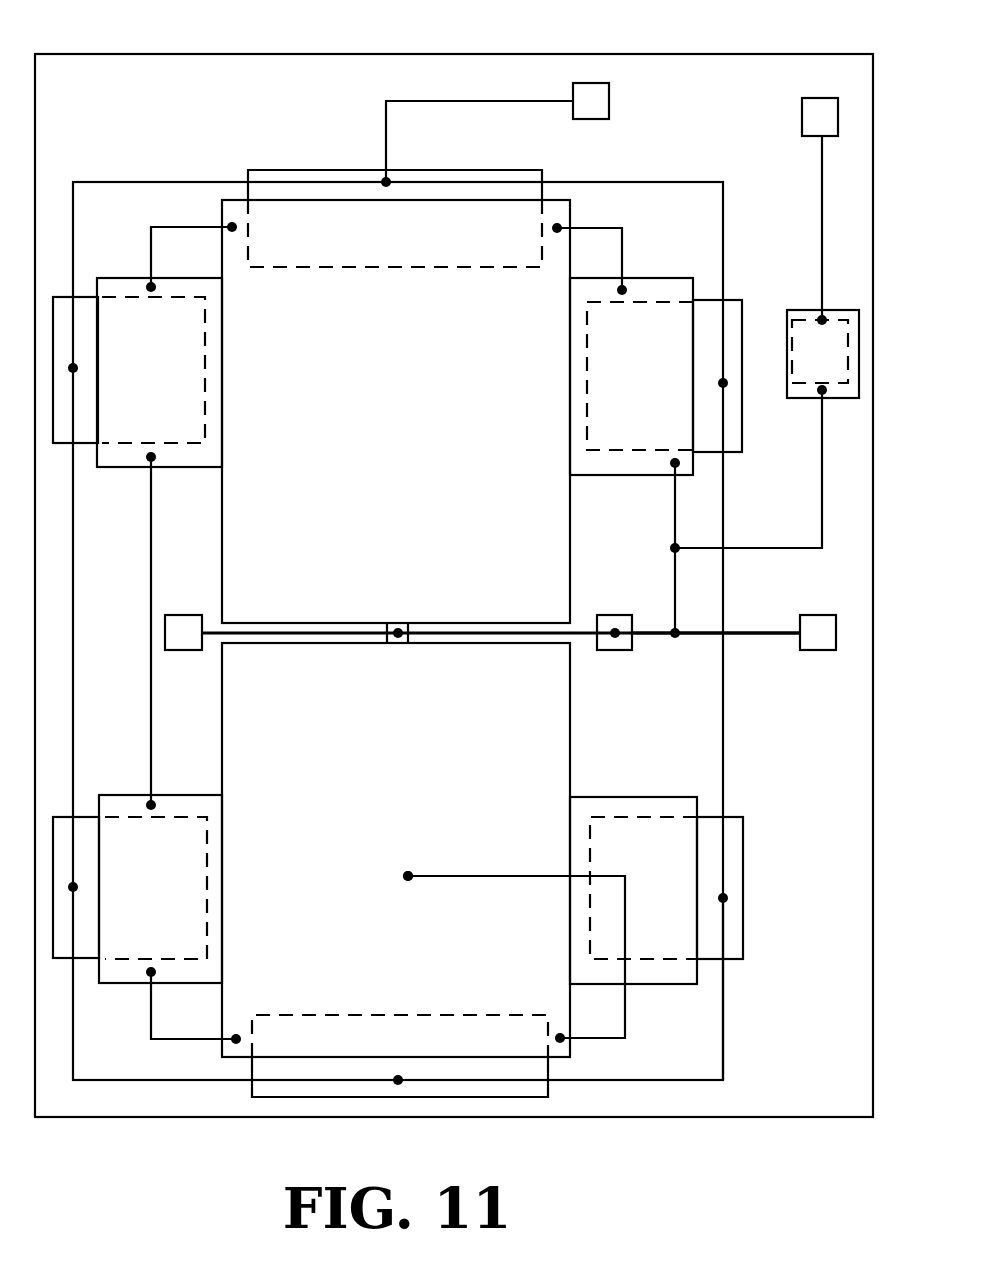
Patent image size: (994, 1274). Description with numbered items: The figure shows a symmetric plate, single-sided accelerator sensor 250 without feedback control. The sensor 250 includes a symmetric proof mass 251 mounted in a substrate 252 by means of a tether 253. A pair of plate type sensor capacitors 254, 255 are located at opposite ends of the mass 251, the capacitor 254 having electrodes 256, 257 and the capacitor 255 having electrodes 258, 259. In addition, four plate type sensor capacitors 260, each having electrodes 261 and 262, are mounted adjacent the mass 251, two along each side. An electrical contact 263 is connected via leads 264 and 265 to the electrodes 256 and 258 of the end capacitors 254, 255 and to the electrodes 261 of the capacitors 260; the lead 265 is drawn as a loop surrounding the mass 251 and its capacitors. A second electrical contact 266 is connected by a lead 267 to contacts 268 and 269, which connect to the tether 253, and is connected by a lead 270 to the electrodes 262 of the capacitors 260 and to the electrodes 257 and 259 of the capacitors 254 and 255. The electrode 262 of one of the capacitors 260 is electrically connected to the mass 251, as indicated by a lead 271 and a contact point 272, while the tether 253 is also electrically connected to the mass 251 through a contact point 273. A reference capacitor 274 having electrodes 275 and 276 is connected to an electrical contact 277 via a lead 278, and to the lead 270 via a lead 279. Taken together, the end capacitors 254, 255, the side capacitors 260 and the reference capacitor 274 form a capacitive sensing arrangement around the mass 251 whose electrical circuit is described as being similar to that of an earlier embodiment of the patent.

The sensor 250 is at (256, 42).
The symmetric proof mass 251 is at (624, 710).
The substrate 252 is at (208, 114).
The tether 253 is at (582, 624).
The plate type sensor capacitor 254 is at (556, 184).
The plate type sensor capacitor 255 is at (560, 1098).
The electrode 256 is at (448, 170).
The electrode 257 is at (566, 226).
The electrode 258 is at (290, 1097).
The electrode 259 is at (572, 1052).
The plate type sensor capacitors 260 is at (442, 624).
The electrode 261 is at (92, 294).
The electrode 262 is at (190, 470).
The electrical contact 263 is at (612, 100).
The lead 264 is at (398, 100).
The lead 265 is at (342, 182).
The electrical contact 266 is at (820, 614).
The lead 267 is at (726, 644).
The contact 268 is at (647, 658).
The contact 269 is at (182, 614).
The lead 270 is at (182, 228).
The lead 271 is at (516, 957).
The contact point 272 is at (408, 850).
The contact point 273 is at (398, 642).
The reference capacitor 274 is at (780, 396).
The electrode 275 is at (802, 308).
The electrode 276 is at (840, 400).
The electrical contact 277 is at (802, 118).
The lead 278 is at (822, 176).
The lead 279 is at (794, 552).